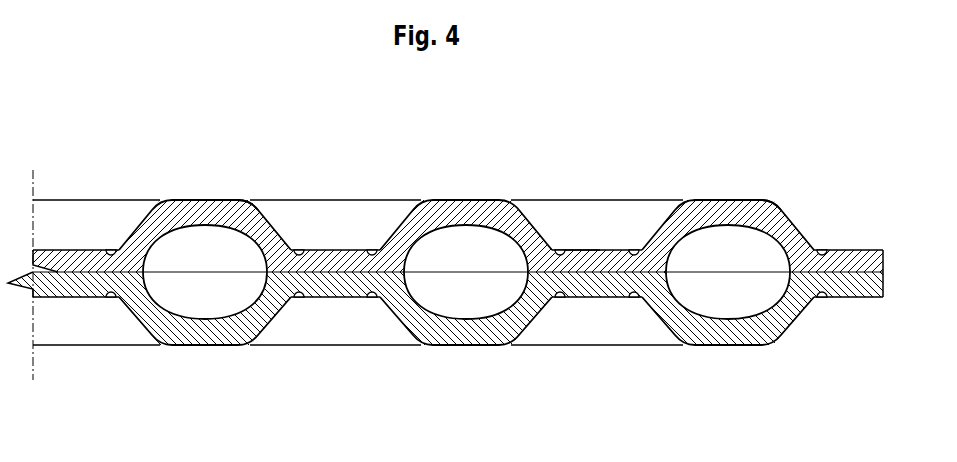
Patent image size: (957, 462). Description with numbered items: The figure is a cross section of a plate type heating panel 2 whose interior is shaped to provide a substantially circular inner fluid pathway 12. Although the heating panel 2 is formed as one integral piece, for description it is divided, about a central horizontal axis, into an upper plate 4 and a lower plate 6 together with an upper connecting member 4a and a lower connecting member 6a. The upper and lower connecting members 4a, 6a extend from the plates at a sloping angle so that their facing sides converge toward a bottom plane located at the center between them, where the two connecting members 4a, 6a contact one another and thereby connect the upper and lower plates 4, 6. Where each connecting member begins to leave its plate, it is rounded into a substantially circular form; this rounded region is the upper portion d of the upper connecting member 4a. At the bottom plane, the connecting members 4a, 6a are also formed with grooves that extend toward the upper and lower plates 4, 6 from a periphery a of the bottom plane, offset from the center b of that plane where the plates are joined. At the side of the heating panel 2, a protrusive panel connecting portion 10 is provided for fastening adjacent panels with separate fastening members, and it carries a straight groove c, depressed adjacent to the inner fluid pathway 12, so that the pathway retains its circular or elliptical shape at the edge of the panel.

The heating panel 2 is at (460, 260).
The upper plate 4 is at (458, 200).
The upper connecting member 4a is at (337, 200).
The lower plate 6 is at (472, 346).
The lower connecting member 6a is at (595, 297).
The protrusive panel connecting portion 10 is at (855, 297).
The inner fluid pathway 12 is at (202, 303).
The periphery of the bottom plane a is at (634, 250).
The center of the bottom plane b is at (582, 250).
The straight groove c is at (822, 250).
The upper portion d is at (773, 200).